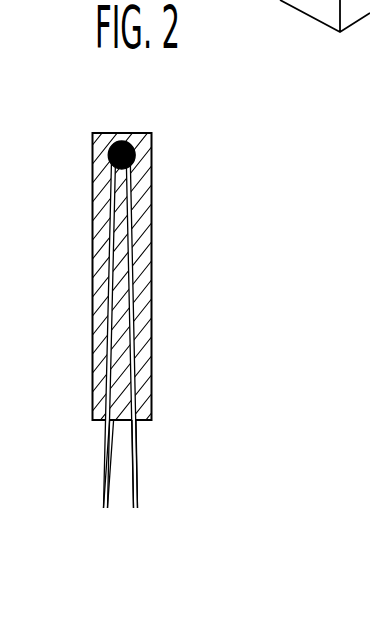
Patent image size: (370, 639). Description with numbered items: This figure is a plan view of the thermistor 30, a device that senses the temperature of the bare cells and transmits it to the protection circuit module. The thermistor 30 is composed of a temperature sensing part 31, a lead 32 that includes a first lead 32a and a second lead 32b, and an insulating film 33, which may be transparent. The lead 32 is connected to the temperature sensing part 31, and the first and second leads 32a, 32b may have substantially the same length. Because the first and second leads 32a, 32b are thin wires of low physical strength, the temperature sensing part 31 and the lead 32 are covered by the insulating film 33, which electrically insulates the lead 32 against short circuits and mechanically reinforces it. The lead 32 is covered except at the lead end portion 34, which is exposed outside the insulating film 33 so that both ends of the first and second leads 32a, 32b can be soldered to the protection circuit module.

The thermistor 30 is at (237, 262).
The temperature sensing part 31 is at (124, 141).
The lead 32 is at (128, 383).
The first lead 32a is at (149, 360).
The second lead 32b is at (105, 508).
The insulating film 33 is at (140, 215).
The lead end portion 34 is at (152, 477).